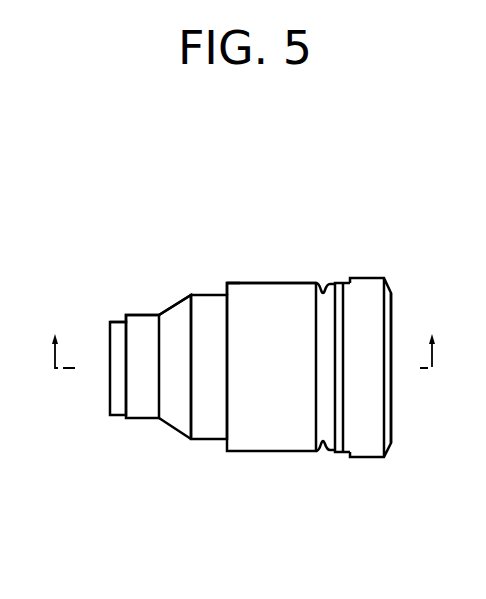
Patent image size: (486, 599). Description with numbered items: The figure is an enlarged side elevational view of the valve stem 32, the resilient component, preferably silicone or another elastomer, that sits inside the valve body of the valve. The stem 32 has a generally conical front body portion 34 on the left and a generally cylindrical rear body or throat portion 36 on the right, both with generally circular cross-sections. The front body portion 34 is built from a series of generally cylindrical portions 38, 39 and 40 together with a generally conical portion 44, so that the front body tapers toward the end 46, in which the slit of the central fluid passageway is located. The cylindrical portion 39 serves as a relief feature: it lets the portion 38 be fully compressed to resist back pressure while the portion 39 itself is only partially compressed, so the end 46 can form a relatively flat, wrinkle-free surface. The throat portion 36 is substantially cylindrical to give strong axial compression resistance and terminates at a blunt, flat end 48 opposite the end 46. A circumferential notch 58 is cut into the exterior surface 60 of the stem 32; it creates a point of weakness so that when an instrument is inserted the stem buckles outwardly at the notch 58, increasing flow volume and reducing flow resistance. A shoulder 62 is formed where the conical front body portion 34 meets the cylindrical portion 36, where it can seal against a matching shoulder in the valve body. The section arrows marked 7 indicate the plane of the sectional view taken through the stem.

The section line 7- 7 is at (244, 334).
The valve stem 32 is at (289, 263).
The front body portion 34 is at (158, 436).
The throat portion 36 is at (372, 458).
The cylindrical portion 38 is at (120, 305).
The cylindrical portion 39 is at (117, 421).
The cylindrical portion 40 is at (207, 442).
The conical portion 44 is at (170, 308).
The end 46 is at (110, 395).
The flat end 48 is at (392, 410).
The circumferential notch 58 is at (325, 452).
The exterior surface 60 is at (258, 282).
The shoulder 62 is at (222, 285).